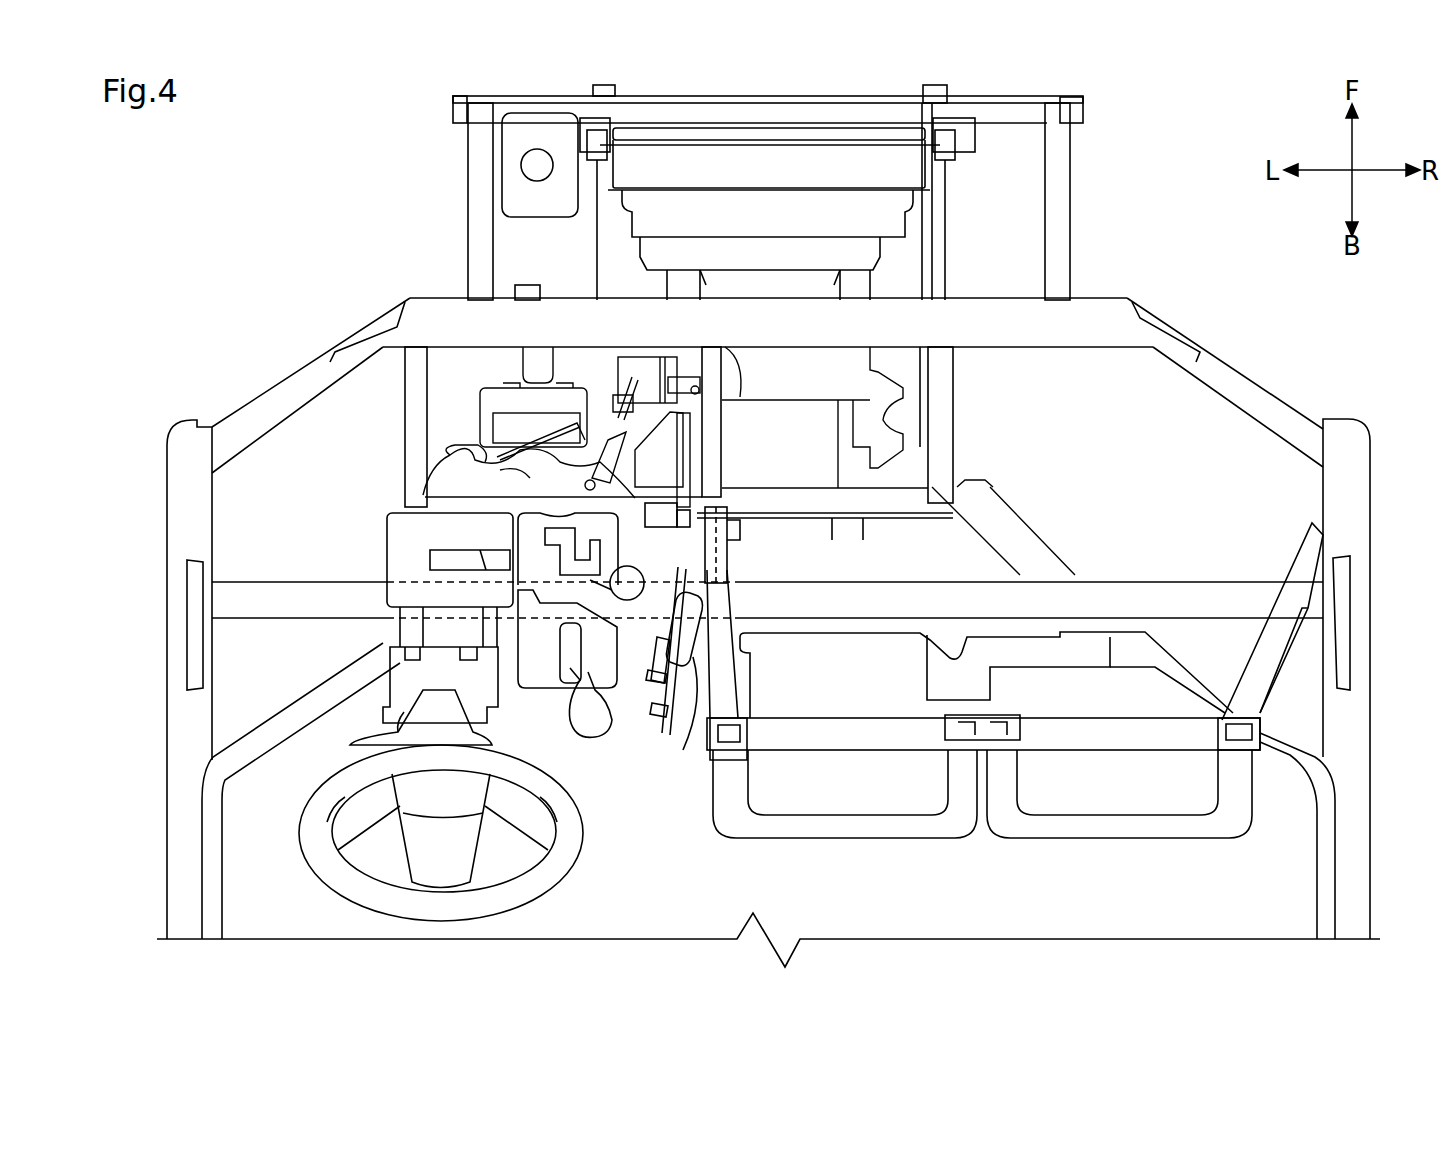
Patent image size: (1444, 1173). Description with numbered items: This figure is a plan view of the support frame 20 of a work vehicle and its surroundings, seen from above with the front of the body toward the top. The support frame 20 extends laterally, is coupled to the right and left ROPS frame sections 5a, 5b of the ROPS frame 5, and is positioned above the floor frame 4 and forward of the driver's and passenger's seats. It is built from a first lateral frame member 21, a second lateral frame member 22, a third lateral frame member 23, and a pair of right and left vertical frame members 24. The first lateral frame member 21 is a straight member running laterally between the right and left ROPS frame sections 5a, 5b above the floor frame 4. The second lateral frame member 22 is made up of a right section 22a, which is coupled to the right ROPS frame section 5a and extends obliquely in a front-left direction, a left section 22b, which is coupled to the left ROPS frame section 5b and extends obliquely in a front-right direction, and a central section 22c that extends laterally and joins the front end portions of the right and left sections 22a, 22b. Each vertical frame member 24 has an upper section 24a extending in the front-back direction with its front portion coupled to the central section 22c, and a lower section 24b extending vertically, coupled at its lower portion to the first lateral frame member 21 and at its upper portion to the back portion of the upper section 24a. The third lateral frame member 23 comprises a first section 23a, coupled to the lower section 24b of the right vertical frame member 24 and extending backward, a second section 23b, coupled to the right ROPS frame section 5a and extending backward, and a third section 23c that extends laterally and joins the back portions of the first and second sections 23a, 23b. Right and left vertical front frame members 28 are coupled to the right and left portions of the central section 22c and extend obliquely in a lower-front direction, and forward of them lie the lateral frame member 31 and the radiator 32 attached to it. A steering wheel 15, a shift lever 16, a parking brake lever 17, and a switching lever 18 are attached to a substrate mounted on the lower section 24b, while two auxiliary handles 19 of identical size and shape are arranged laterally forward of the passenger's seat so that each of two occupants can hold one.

The floor frame 4 is at (990, 880).
The ROPS frame 5 is at (764, 679).
The right ROPS frame section 5a is at (1350, 475).
The left ROPS frame section 5b is at (185, 503).
The steering wheel 15 is at (560, 865).
The shift lever 16 is at (600, 735).
The parking brake lever 17 is at (700, 700).
The switching lever 18 is at (625, 587).
The auxiliary handles 19 is at (848, 838).
The support frame 20 is at (214, 369).
The first lateral frame member 21 is at (1130, 590).
The second lateral frame member 22 is at (776, 352).
The right section 22a is at (1250, 392).
The left section 22b is at (293, 390).
The central section 22c is at (990, 335).
The third lateral frame member 23 is at (1075, 667).
The first section 23a is at (740, 680).
The second section 23b is at (1265, 680).
The third section 23c is at (1068, 740).
The vertical frame members 24 is at (613, 535).
The upper section 24a is at (415, 402).
The lower section 24b is at (772, 557).
The vertical front frame members 28 is at (480, 195).
The lateral frame member 31 is at (740, 112).
The radiator 32 is at (855, 165).